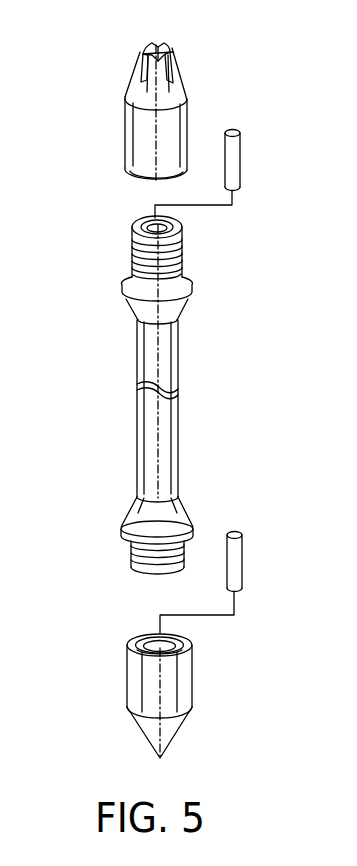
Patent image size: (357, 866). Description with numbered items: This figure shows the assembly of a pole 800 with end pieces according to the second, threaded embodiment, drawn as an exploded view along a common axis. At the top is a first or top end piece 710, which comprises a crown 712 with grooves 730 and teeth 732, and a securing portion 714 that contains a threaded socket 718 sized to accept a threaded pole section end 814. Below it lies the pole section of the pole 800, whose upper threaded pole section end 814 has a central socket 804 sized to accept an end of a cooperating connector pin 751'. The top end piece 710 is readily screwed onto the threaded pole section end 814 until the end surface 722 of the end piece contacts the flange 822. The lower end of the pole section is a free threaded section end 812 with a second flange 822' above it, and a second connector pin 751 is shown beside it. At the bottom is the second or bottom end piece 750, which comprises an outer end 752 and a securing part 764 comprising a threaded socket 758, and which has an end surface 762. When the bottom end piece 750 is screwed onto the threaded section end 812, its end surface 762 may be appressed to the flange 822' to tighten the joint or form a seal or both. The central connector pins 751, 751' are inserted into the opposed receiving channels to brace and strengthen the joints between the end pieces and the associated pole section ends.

The top end piece 710 is at (187, 124).
The crown 712 is at (203, 45).
The securing portion 714 is at (115, 100).
The threaded socket 718 is at (150, 180).
The end surface 722 is at (127, 171).
The grooves 730 is at (152, 46).
The teeth 732 is at (146, 55).
The connector pin 751' is at (231, 174).
The connector pin 751 is at (230, 583).
The pole 800 is at (197, 382).
The central socket 804 is at (143, 224).
The threaded pole section end 814 is at (183, 236).
The flange 822 is at (192, 295).
The flange 822' is at (120, 513).
The threaded section end 812 is at (131, 553).
The bottom end piece 750 is at (193, 675).
The outer end 752 is at (197, 708).
The threaded socket 758 is at (150, 638).
The end surface 762 is at (138, 643).
The securing part 764 is at (113, 645).